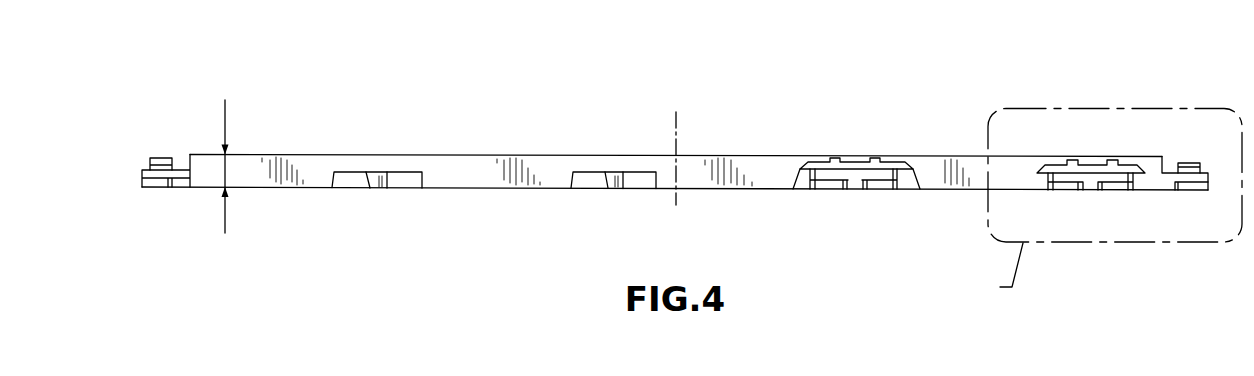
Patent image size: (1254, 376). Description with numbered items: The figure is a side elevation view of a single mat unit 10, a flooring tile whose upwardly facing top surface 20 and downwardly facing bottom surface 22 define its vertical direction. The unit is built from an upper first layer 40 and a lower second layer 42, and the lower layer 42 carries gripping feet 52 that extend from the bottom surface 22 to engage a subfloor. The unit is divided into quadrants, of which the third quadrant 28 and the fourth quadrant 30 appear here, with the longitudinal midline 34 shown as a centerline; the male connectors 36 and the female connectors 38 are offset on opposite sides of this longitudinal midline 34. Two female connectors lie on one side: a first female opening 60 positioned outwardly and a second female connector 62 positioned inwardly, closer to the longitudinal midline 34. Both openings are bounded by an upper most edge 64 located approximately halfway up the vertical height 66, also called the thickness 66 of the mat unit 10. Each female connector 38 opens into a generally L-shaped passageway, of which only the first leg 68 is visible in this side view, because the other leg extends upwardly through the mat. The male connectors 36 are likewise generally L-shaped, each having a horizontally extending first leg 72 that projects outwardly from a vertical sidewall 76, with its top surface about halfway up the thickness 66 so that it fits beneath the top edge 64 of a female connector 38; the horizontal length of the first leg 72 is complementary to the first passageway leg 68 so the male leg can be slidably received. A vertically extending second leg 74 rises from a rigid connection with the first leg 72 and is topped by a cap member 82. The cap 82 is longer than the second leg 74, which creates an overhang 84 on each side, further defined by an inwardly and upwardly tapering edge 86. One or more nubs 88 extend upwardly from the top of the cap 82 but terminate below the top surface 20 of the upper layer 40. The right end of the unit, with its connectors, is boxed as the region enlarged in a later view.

The single mat unit 10 is at (520, 98).
The top surface 20 is at (676, 118).
The bottom surface 22 is at (675, 227).
The third quadrant 28 is at (292, 137).
The fourth quadrant 30 is at (1022, 134).
The longitudinal midline 34 is at (675, 120).
The male connector 36 is at (1090, 152).
The female connector 38 is at (472, 187).
The upper first layer 40 is at (752, 150).
The lower second layer 42 is at (717, 195).
The gripping feet 52 is at (375, 185).
The first female opening 60 is at (343, 192).
The second female connector 62 is at (580, 190).
The upper most edge 64 is at (354, 171).
The vertical height 66 is at (225, 112).
The first leg 68 is at (412, 181).
The first leg 72 is at (152, 198).
The second leg 74 is at (546, 118).
The vertical sidewall 76 is at (478, 171).
The cap member 82 is at (855, 150).
The overhang 84 is at (793, 189).
The tapering edge 86 is at (806, 162).
The nub 88 is at (152, 152).